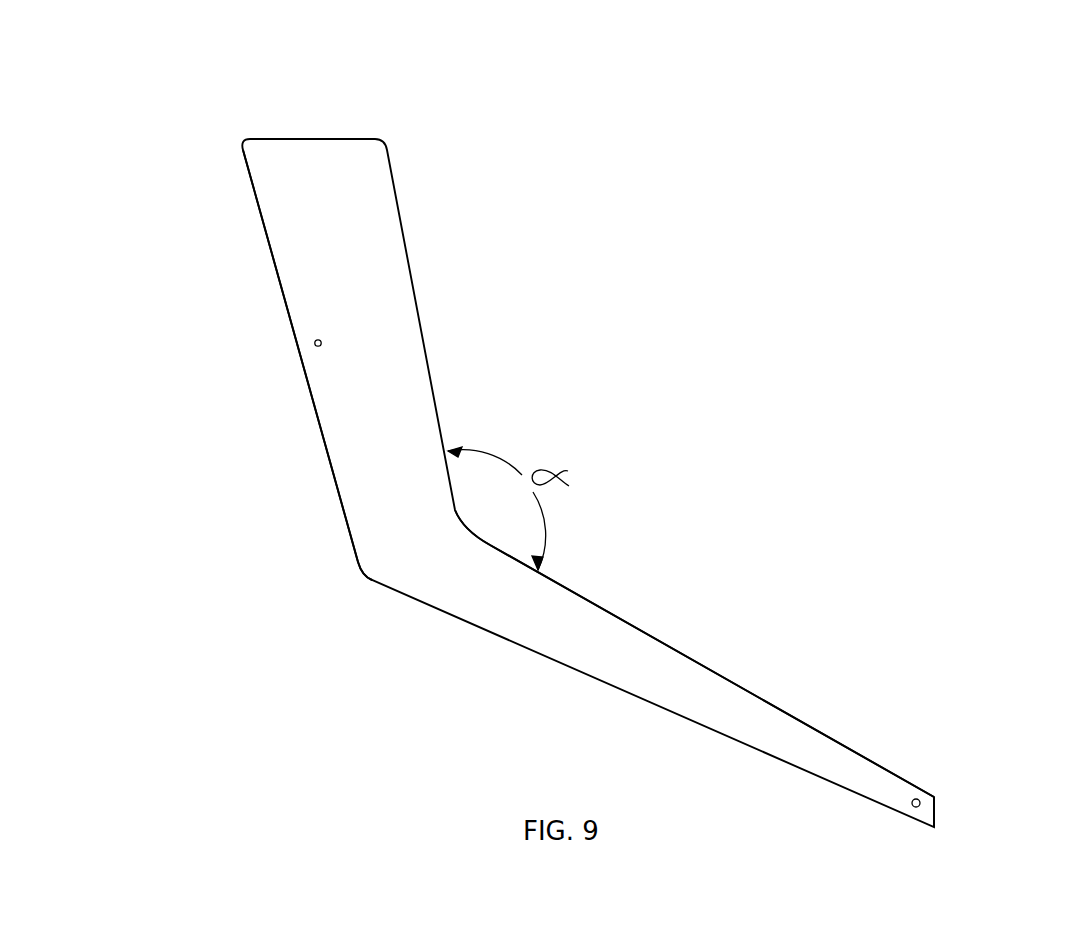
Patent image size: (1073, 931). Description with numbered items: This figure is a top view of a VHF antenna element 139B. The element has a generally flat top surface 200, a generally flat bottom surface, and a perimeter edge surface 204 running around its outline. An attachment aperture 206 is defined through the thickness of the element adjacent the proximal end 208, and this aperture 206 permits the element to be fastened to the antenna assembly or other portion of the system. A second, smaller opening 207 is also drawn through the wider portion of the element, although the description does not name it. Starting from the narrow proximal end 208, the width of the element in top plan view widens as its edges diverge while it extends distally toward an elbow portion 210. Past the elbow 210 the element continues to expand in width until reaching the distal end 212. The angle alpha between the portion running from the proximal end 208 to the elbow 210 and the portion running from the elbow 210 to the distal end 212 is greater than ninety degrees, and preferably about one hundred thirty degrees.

The top surface 200 is at (400, 305).
The perimeter edge surface 204 is at (256, 210).
The attachment aperture 206 is at (916, 799).
The aperture 207 is at (316, 341).
The proximal end 208 is at (936, 812).
The elbow portion 210 is at (367, 574).
The distal end 212 is at (300, 138).
The VHF antenna element 139B is at (623, 540).